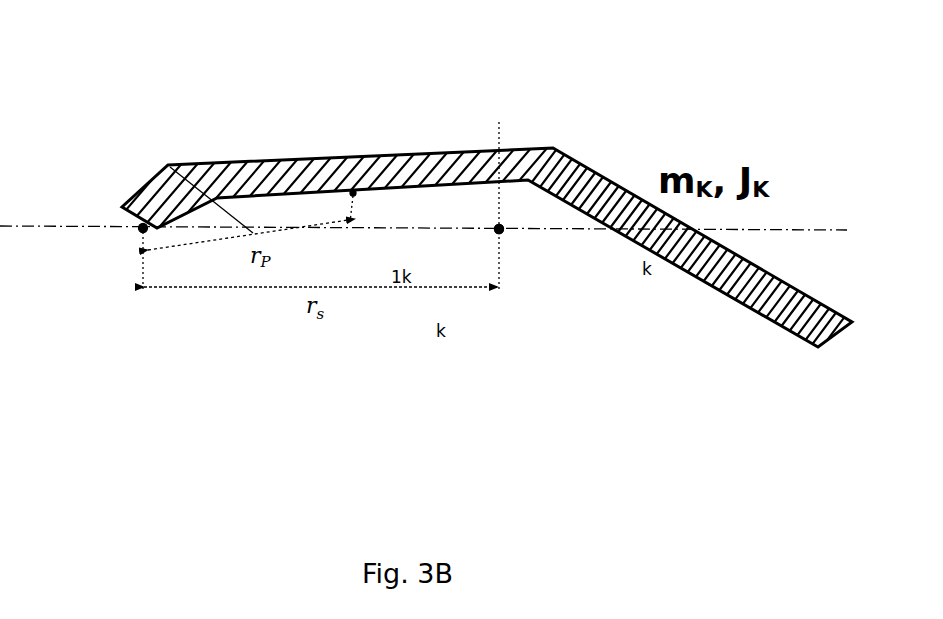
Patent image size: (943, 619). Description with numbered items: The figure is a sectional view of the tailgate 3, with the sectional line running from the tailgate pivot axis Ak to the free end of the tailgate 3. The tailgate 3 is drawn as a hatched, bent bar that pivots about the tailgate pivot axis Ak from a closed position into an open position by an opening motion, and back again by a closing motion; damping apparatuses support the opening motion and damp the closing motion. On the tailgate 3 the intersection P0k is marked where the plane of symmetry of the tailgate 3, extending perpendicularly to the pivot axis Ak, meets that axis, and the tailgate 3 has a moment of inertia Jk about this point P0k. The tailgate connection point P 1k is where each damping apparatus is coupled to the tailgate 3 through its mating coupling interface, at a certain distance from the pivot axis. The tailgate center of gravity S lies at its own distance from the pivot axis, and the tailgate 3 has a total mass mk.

The tailgate 3 is at (537, 116).
The tailgate connection point 1k is at (511, 224).
The tailgate center of gravity S is at (511, 249).
The intersection point of plane of symmetry and pivot axis P0k is at (247, 240).
The tailgate connection point P is at (368, 205).
The tailgate pivot axis Ak is at (200, 191).